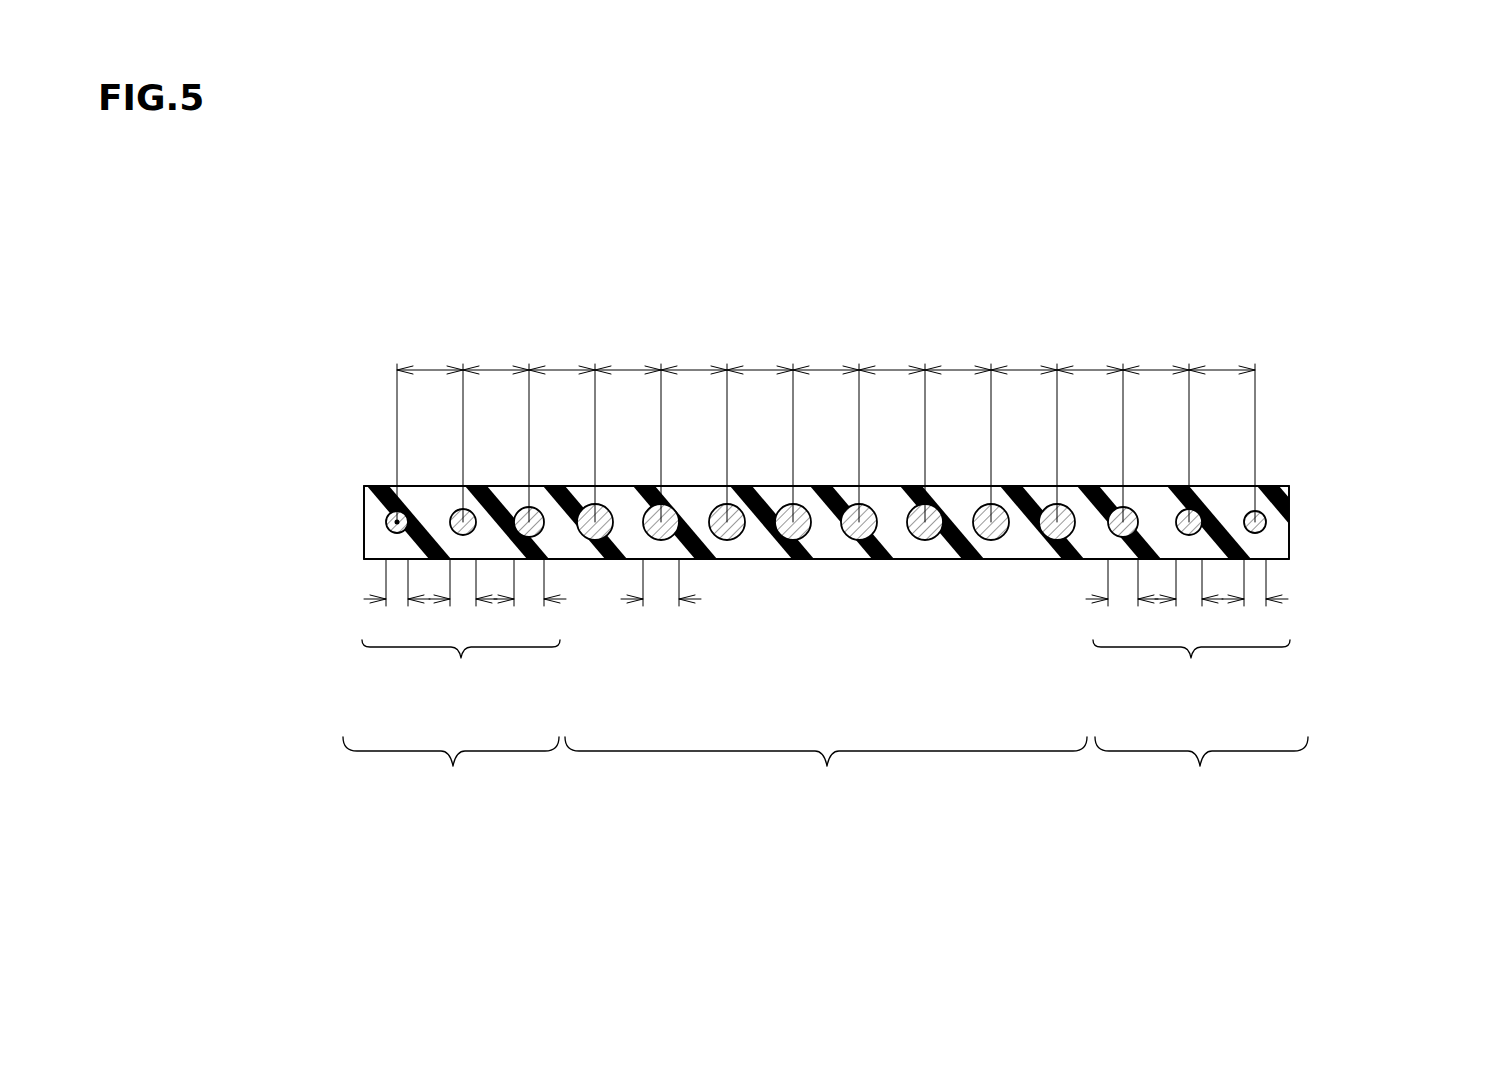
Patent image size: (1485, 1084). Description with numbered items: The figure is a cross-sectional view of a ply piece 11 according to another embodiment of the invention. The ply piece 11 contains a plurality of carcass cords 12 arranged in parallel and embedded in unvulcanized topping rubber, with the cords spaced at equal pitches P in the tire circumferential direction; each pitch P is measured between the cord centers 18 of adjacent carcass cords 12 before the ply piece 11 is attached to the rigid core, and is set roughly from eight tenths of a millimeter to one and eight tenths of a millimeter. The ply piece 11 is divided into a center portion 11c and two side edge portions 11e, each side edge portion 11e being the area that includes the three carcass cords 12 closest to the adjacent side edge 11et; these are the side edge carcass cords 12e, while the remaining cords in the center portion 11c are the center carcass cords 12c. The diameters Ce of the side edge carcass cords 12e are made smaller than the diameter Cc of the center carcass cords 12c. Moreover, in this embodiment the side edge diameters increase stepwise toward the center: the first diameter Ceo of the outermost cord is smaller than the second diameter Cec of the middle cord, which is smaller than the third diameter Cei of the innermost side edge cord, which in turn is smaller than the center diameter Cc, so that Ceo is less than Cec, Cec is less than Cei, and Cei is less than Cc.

The ply piece 11 is at (1302, 417).
The side edge portion 11e is at (825, 770).
The center portion 11c is at (826, 770).
The side edge 11et is at (364, 503).
The carcass cord 12 is at (928, 613).
The center carcass cord 12c is at (871, 534).
The side edge carcass cord 12e is at (1266, 522).
The cord center 18 is at (387, 523).
The pitch P is at (826, 430).
The first diameter Ceo is at (826, 598).
The second diameter Cec is at (826, 598).
The third diameter Cei is at (826, 598).
The diameters of the side edge carcass cords Ce is at (826, 668).
The diameter of the center carcass cords Cc is at (661, 598).